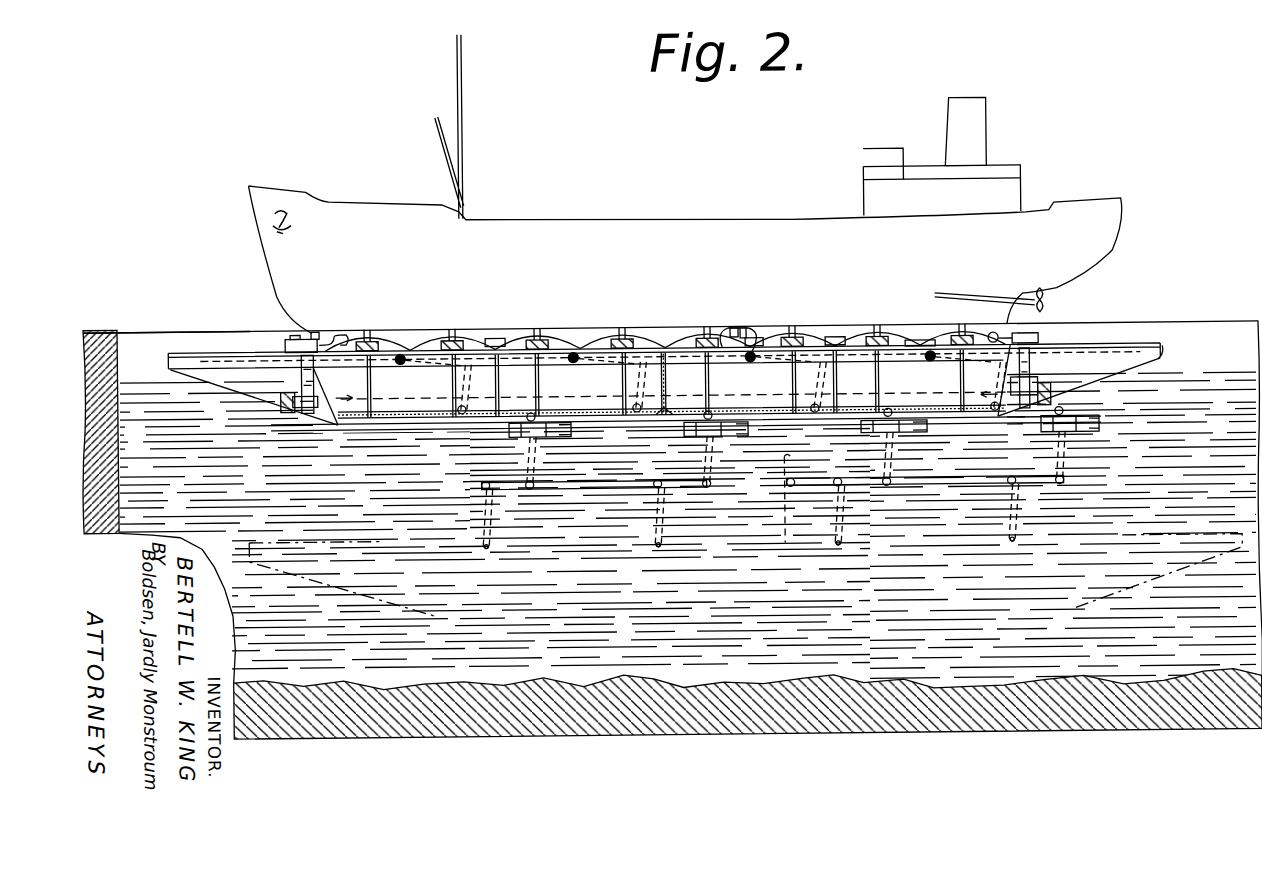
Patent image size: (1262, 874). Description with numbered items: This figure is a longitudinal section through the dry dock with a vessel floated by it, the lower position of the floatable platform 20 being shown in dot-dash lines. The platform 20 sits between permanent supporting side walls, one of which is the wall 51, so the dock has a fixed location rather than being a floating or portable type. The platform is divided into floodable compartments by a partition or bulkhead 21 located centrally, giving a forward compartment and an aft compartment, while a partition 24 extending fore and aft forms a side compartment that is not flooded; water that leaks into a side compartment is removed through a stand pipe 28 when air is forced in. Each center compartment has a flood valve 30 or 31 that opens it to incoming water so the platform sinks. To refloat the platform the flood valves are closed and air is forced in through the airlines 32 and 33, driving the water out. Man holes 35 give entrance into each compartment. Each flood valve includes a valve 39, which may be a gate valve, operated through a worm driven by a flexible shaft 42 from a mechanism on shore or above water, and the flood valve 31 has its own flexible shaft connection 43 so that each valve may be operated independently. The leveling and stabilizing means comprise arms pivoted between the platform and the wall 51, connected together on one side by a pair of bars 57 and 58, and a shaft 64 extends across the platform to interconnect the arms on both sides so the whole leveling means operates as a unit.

The floatable platform 20 is at (1127, 352).
The partition or bulkhead 21 is at (664, 392).
The partition 24 is at (489, 503).
The stand pipe 28 is at (836, 343).
The flood valve 30 is at (300, 343).
The flood valve 31 is at (1036, 348).
The airline 32 is at (336, 341).
The airline 33 is at (493, 340).
The man hole 35 is at (418, 352).
The valve 39 is at (313, 389).
The flexible shaft 42 is at (132, 330).
The flexible shaft connection 43 is at (918, 347).
The side wall 51 is at (1218, 338).
The bar 57 is at (572, 376).
The bar 58 is at (602, 408).
The shaft 64 is at (400, 356).